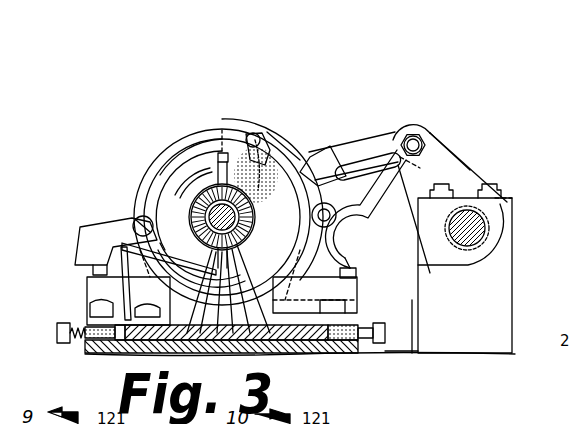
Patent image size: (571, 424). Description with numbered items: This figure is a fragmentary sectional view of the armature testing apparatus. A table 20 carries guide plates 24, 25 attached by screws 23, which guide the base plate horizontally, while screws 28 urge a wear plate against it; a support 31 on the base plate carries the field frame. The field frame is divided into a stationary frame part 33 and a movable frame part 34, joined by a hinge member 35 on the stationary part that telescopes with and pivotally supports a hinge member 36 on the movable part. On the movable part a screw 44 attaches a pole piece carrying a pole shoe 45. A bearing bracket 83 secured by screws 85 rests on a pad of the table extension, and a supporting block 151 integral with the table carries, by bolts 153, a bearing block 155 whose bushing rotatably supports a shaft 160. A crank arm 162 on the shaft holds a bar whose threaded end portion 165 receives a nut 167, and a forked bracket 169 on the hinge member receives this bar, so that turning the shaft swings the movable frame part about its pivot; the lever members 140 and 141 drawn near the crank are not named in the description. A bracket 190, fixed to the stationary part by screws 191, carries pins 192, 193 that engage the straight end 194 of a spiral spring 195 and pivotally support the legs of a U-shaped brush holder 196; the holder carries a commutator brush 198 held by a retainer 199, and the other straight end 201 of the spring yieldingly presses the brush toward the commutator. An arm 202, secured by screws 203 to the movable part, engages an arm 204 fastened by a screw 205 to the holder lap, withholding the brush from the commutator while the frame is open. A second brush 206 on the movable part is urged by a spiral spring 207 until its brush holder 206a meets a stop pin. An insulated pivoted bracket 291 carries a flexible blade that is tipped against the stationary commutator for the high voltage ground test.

The table 20 is at (100, 352).
The screws 23 is at (360, 298).
The guide plate 24 is at (87, 325).
The guide plate 25 is at (360, 323).
The screws 28 is at (57, 330).
The support 31 is at (290, 377).
The stationary field frame part 33 is at (92, 282).
The movable field frame part 34 is at (167, 160).
The hinge member 35 is at (297, 258).
The hinge member 36 is at (303, 168).
The screw 44 is at (182, 162).
The pole shoe 45 is at (189, 227).
The bearing bracket 83 is at (88, 282).
The screws 85 is at (358, 278).
The lever arm 140 is at (380, 147).
The link 141 is at (393, 182).
The supporting block 151 is at (460, 297).
The bolts 153 is at (490, 192).
The bearing block 155 is at (515, 200).
The shaft 160 is at (455, 250).
The crank arm 162 is at (437, 152).
The reduced threaded end portion 165 is at (415, 135).
The nut 167 is at (432, 137).
The forked bracket 169 is at (330, 167).
The bracket 190 is at (270, 332).
The screws 191 is at (312, 288).
The pin 192 is at (298, 340).
The pin 193 is at (262, 342).
The straight end of spiral spring 194 is at (352, 238).
The spiral spring 195 is at (221, 367).
The U-shaped brush holder 196 is at (214, 317).
The commutator brush 198 is at (180, 268).
The retainer 199 is at (194, 302).
The straight end of spiral spring 201 is at (200, 348).
The arm 202 is at (370, 240).
The screws 203 is at (278, 147).
The arm 204 is at (314, 303).
The screw 205 is at (165, 348).
The second brush 206 is at (220, 158).
The brush holder 206a is at (250, 130).
The spiral spring 207 is at (265, 130).
The insulated pivotally supported bracket 291 is at (85, 243).